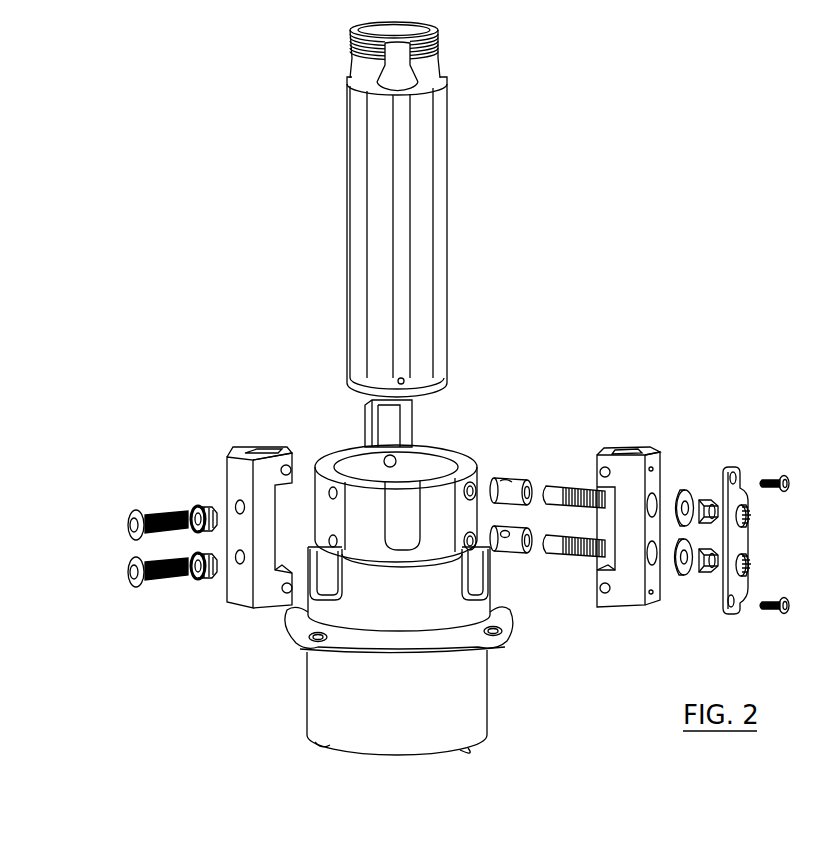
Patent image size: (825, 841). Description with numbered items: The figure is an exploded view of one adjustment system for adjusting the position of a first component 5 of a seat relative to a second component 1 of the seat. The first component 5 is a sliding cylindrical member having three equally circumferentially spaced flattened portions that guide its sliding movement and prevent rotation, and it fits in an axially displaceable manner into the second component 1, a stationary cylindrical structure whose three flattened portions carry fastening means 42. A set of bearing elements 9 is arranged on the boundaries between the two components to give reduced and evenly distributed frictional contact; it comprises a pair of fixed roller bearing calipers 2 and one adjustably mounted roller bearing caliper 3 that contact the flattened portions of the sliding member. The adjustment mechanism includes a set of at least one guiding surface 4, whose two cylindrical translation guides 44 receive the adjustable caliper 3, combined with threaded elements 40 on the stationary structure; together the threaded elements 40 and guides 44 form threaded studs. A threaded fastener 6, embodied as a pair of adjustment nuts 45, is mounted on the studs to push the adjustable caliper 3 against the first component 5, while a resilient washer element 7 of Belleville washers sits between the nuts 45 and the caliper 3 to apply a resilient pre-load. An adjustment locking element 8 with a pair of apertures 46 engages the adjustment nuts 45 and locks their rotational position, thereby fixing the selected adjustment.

The second component 1 is at (437, 490).
The fixed roller bearing calipers 2 is at (232, 470).
The adjustably mounted roller bearing caliper 3 is at (633, 472).
The guiding surface 4 is at (518, 480).
The first component 5 is at (420, 228).
The threaded fastener 6 is at (704, 503).
The resilient washer element 7 is at (682, 491).
The adjustment locking element 8 is at (750, 546).
The bearing elements 9 is at (621, 450).
The threaded element 40 is at (573, 488).
The fastening means 42 is at (474, 490).
The cylindrical translation guides 44 is at (508, 540).
The adjustment nuts 45 is at (704, 578).
The apertures 46 is at (750, 510).